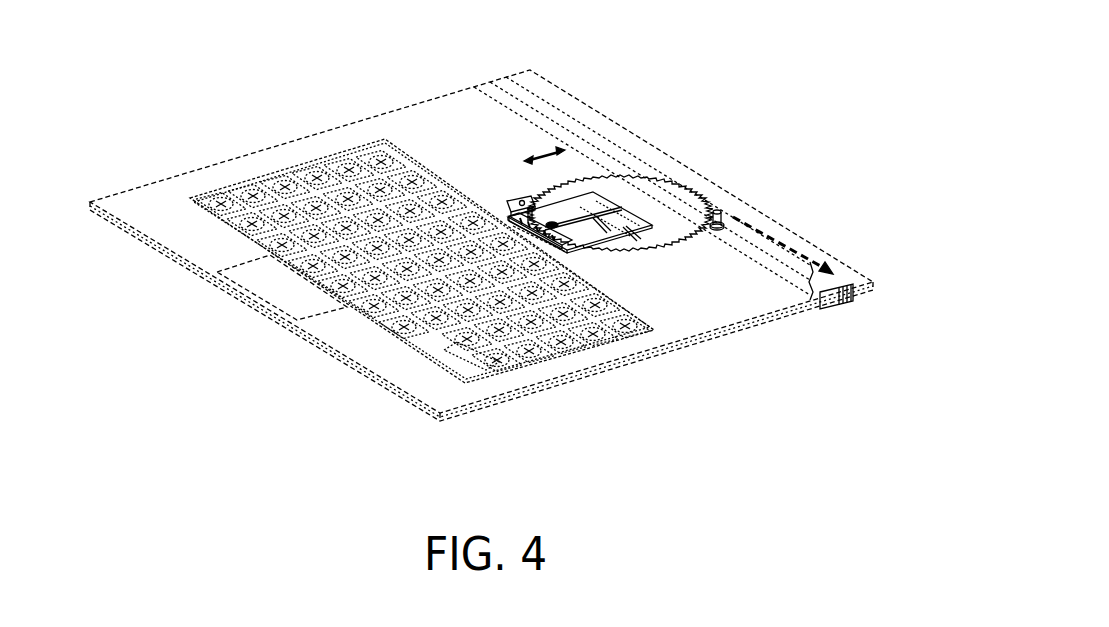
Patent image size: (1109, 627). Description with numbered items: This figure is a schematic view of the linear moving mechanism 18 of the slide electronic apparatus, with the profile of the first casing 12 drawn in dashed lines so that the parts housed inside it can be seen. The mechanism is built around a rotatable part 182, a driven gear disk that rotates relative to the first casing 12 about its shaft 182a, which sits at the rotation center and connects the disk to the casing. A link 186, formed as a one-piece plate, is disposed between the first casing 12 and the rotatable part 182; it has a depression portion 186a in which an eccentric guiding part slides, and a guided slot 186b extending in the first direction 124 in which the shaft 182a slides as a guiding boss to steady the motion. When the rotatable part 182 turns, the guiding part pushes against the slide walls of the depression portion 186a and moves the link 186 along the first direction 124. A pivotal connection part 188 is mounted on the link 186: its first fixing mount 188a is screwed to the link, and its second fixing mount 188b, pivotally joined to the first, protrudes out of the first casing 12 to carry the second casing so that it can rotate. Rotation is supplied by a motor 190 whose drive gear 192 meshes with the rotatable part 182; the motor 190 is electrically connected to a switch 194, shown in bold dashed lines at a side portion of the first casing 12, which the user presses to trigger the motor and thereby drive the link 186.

The first casing 12 is at (457, 103).
The linear moving mechanism 18 is at (742, 96).
The first direction 124 is at (545, 150).
The rotatable part 182 is at (688, 197).
The shaft 182a is at (622, 207).
The link 186 is at (597, 193).
The depression portion 186a is at (624, 232).
The guided slot 186b is at (607, 231).
The pivotal connection part 188 is at (398, 143).
The first fixing mount 188a is at (522, 202).
The second fixing mount 188b is at (512, 230).
The motor 190 is at (720, 212).
The drive gear 192 is at (730, 232).
The switch 194 is at (836, 308).